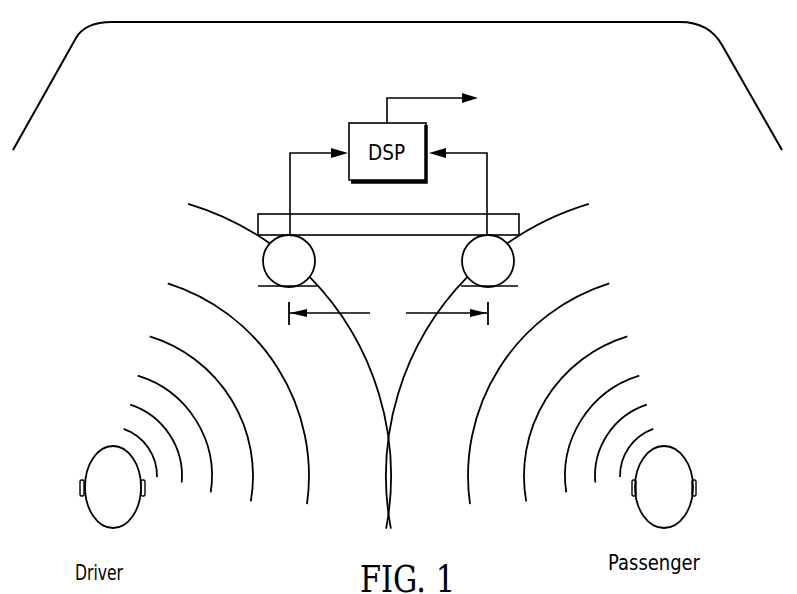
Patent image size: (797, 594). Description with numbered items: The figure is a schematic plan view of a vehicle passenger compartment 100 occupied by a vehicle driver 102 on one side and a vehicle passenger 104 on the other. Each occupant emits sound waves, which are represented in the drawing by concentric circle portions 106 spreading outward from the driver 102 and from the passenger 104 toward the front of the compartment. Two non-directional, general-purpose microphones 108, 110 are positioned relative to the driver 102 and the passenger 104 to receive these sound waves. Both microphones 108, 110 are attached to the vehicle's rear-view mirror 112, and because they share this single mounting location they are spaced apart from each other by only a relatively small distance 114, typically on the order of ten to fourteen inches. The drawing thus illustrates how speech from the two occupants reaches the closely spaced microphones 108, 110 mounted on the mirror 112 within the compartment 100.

The vehicle passenger compartment 100 is at (172, 74).
The vehicle driver 102 is at (93, 516).
The vehicle passenger 104 is at (681, 515).
The concentric circle portions 106 is at (306, 503).
The microphone 108 is at (306, 261).
The microphone 110 is at (471, 262).
The rear-view mirror 112 is at (513, 214).
The distance 114 is at (388, 313).